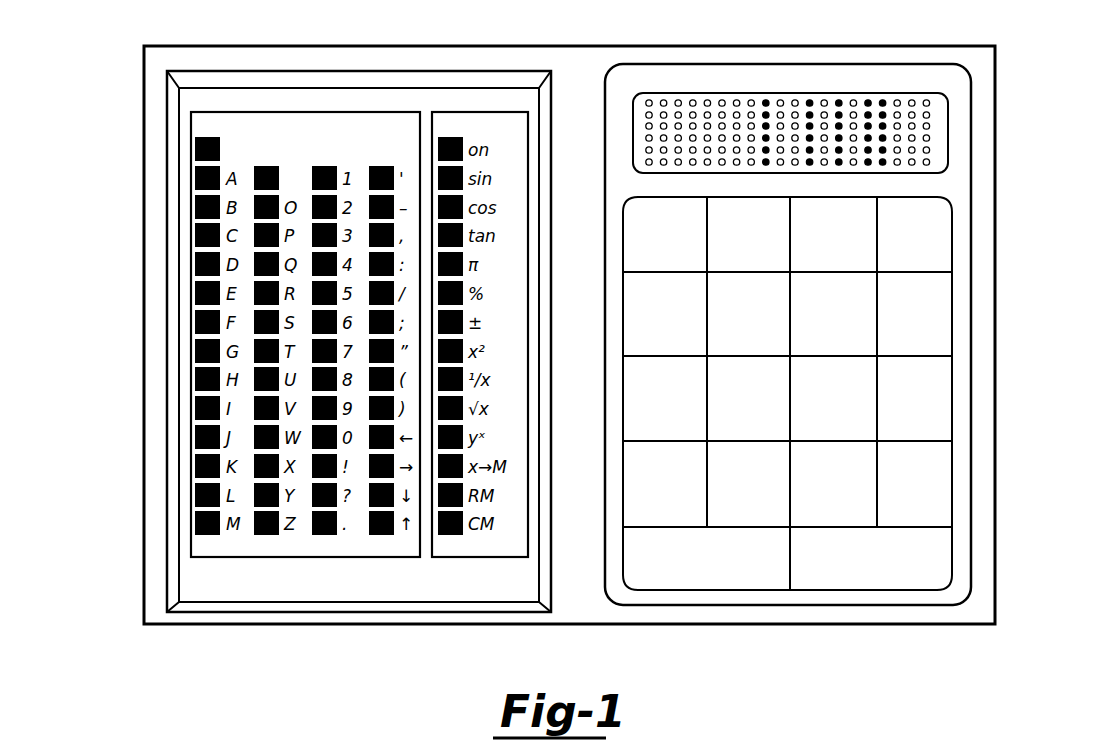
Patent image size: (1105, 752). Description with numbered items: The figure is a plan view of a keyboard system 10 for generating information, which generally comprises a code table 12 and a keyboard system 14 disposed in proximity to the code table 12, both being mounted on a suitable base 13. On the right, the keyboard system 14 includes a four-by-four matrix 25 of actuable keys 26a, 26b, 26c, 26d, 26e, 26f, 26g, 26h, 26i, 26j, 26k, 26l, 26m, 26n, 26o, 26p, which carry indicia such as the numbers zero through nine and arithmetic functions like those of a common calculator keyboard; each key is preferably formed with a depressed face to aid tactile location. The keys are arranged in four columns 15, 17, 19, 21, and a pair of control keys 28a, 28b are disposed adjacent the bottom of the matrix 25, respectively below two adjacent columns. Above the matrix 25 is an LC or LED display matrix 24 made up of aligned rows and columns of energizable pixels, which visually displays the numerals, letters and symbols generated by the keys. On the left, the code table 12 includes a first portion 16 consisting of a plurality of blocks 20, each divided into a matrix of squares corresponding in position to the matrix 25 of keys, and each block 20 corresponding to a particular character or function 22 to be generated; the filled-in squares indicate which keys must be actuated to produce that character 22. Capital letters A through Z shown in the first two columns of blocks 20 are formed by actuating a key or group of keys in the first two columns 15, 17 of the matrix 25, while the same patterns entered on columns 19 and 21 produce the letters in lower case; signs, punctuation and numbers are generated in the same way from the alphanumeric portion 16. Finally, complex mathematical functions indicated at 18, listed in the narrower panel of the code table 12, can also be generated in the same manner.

The keyboard system 10 is at (997, 98).
The code table 12 is at (404, 60).
The base 13 is at (983, 262).
The keyboard system 14 is at (732, 593).
The first column of keys 15 is at (685, 196).
The first portion of code table 16 is at (312, 557).
The second column of keys 17 is at (760, 196).
The complex mathematical functions 18 is at (470, 557).
The third column of keys 19 is at (832, 196).
The block 20 is at (208, 136).
The fourth column of keys 21 is at (905, 196).
The character or function 22 is at (283, 176).
The display matrix 24 is at (780, 24).
The matrix of keys 25 is at (947, 477).
The actuable key 26a is at (672, 229).
The actuable key 26b is at (754, 229).
The actuable key 26c is at (842, 229).
The actuable key 26d is at (920, 229).
The actuable key 26e is at (672, 305).
The actuable key 26f is at (754, 305).
The actuable key 26g is at (834, 305).
The actuable key 26h is at (924, 299).
The actuable key 26i is at (672, 393).
The actuable key 26j is at (752, 393).
The actuable key 26k is at (840, 387).
The actuable key 26l is at (922, 393).
The actuable key 26m is at (678, 475).
The actuable key 26n is at (756, 475).
The actuable key 26o is at (840, 475).
The actuable key 26p is at (922, 475).
The control key 28a is at (947, 556).
The control key 28b is at (716, 575).